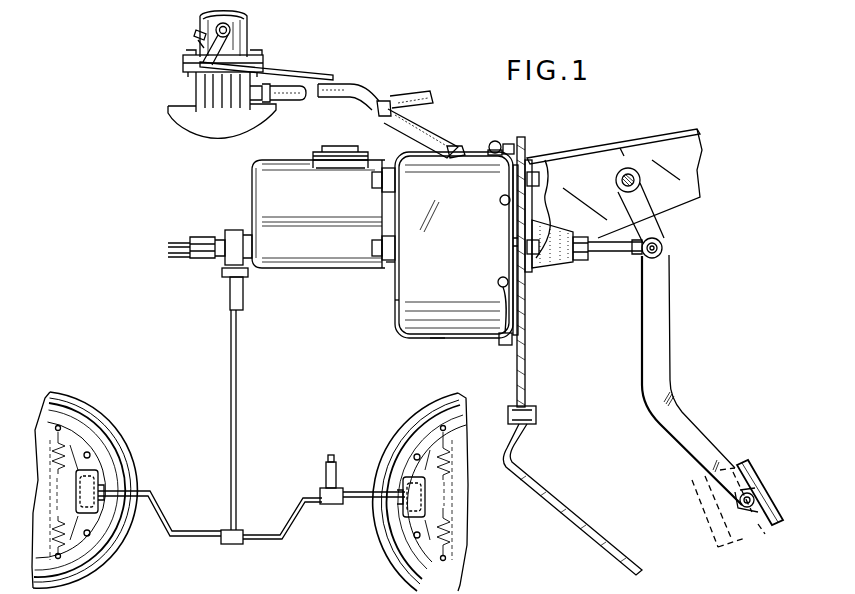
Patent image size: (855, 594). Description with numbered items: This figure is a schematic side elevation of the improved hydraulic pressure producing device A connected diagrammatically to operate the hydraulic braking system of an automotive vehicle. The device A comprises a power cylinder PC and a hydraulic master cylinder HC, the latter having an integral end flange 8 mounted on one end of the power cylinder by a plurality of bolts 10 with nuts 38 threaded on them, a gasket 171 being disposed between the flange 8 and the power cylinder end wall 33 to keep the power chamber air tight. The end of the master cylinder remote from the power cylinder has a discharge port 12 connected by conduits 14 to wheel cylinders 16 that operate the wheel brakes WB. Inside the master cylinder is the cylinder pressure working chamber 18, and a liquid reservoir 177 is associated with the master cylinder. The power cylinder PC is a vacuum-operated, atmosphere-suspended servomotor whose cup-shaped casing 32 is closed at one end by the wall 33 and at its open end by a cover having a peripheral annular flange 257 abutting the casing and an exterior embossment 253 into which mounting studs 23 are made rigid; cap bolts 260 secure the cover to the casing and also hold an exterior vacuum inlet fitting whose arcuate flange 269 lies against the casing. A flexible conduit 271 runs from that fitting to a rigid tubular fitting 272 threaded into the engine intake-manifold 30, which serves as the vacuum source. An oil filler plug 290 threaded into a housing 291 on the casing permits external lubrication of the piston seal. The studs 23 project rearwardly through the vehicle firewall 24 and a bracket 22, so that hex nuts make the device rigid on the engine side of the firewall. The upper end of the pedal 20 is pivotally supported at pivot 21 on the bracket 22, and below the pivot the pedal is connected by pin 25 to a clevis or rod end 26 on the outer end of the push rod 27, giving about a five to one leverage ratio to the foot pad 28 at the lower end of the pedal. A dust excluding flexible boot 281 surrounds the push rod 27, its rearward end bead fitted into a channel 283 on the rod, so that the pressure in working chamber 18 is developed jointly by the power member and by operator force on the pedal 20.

The engine intake-manifold 30 is at (178, 114).
The flexible conduit 271 is at (417, 128).
The rigid tubular fitting 272 is at (262, 98).
The housing 291 is at (449, 151).
The oil filler plug 290 is at (494, 140).
The hydraulic master cylinder HC is at (250, 175).
The nuts 38 is at (393, 141).
The liquid reservoir 177 is at (348, 200).
The cylinder pressure working chamber 18 is at (327, 250).
The bolts 10 is at (378, 253).
The end flange 8 is at (388, 268).
The gasket 171 is at (374, 288).
The power cylinder PC is at (485, 260).
The wall 33 is at (393, 312).
The cup-shaped casing 32 is at (438, 338).
The hydraulic pressure producing device A is at (393, 351).
The cap bolts 260 is at (506, 194).
The arcuate flange 269 is at (506, 156).
The exterior embossment 253 is at (515, 242).
The peripheral annular flange 257 is at (508, 348).
The vehicle firewall 24 is at (528, 384).
The bracket 22 is at (648, 152).
The studs 23 is at (548, 165).
The pivot 21 is at (640, 181).
The pedal 20 is at (708, 455).
The foot pad 28 is at (737, 509).
The pin 25 is at (665, 255).
The clevis or rod end 26 is at (662, 244).
The push rod 27 is at (605, 252).
The channel 283 is at (585, 262).
The flexible boot 281 is at (554, 266).
The discharge port 12 is at (242, 238).
The conduits 14 is at (231, 352).
The wheel brakes WB is at (98, 395).
The wheel cylinders 16 is at (100, 516).